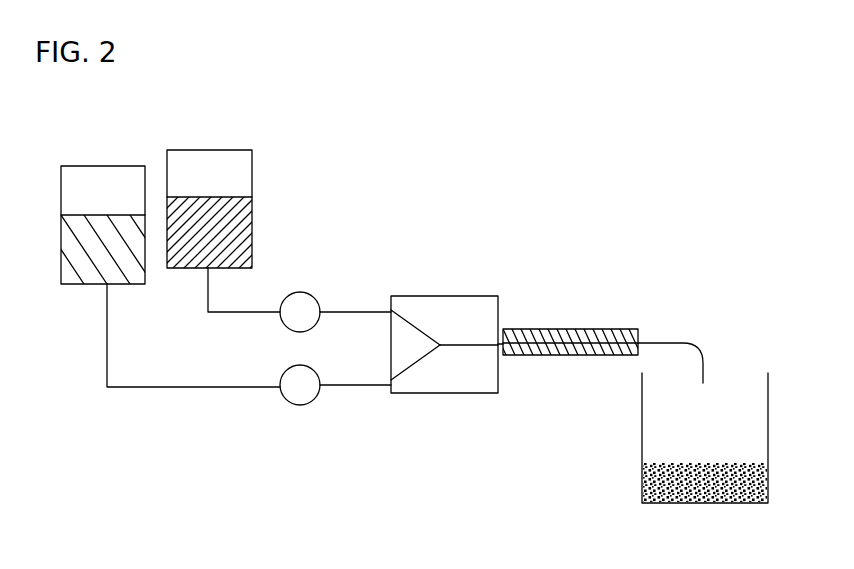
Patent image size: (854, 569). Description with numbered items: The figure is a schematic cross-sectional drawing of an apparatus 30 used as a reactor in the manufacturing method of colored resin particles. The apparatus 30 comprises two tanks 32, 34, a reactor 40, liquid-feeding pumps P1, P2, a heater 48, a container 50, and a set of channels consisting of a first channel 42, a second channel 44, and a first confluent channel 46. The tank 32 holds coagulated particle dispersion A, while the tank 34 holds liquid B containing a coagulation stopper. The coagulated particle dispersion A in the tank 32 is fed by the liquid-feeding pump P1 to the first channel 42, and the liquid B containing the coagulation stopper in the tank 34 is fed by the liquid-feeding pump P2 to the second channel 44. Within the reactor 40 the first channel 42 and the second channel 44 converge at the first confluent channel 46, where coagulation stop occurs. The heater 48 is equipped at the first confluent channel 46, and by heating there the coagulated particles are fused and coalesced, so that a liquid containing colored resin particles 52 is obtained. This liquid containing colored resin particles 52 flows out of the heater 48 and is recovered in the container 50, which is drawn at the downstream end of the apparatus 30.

The apparatus 30 is at (352, 147).
The tank 32 is at (95, 228).
The tank 34 is at (208, 213).
The coagulated particle dispersion A is at (92, 268).
The liquid containing a coagulation stopper B is at (187, 255).
The liquid-feeding pump P1 is at (300, 405).
The liquid-feeding pump P2 is at (300, 292).
The reactor 40 is at (452, 353).
The first channel 42 is at (417, 366).
The second channel 44 is at (413, 323).
The first confluent channel 46 is at (470, 348).
The heater 48 is at (570, 329).
The container 50 is at (651, 438).
The liquid containing colored resin particles 52 is at (647, 488).